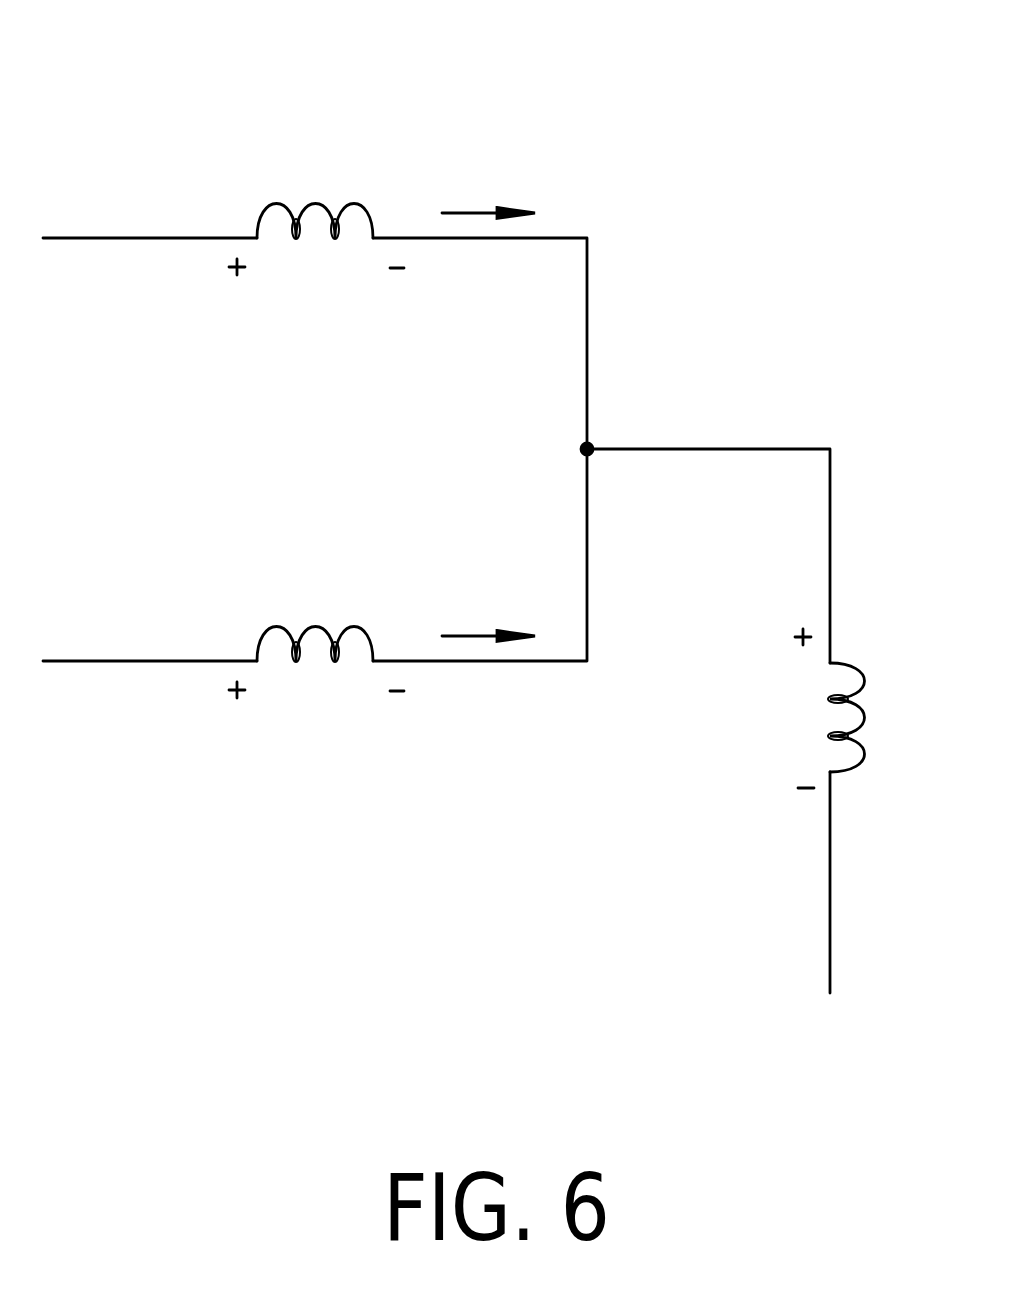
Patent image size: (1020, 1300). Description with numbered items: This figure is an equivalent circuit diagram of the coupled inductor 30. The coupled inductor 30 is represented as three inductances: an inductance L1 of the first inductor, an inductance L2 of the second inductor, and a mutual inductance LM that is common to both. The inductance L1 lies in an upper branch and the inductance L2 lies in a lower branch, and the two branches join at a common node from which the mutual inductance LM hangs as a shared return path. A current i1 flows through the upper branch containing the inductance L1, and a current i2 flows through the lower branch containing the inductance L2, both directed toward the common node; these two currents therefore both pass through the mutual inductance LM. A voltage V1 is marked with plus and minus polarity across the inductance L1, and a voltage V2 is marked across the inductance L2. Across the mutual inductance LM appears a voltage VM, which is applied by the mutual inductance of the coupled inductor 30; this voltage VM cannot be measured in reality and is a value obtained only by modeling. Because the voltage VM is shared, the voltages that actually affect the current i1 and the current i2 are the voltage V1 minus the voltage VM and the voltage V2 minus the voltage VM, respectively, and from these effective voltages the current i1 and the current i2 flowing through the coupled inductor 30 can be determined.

The coupled inductor 30 is at (503, 502).
The inductance of the first inductor L1 is at (315, 182).
The inductance of the second inductor L2 is at (315, 605).
The mutual inductance LM is at (895, 717).
The current flowing through the first inductor i1 is at (488, 179).
The current flowing through the second inductor i2 is at (488, 602).
The voltage across the first inductor V1 is at (316, 298).
The voltage across the second inductor V2 is at (316, 722).
The voltage by mutual inductance VM is at (781, 708).